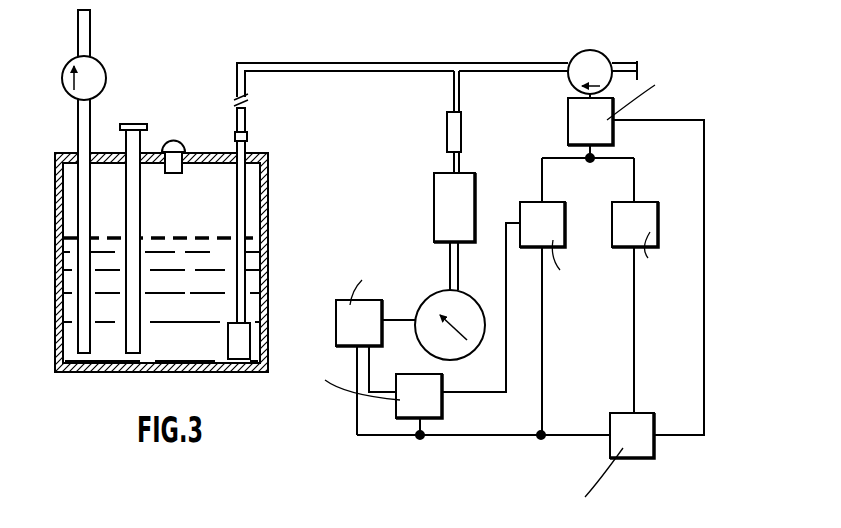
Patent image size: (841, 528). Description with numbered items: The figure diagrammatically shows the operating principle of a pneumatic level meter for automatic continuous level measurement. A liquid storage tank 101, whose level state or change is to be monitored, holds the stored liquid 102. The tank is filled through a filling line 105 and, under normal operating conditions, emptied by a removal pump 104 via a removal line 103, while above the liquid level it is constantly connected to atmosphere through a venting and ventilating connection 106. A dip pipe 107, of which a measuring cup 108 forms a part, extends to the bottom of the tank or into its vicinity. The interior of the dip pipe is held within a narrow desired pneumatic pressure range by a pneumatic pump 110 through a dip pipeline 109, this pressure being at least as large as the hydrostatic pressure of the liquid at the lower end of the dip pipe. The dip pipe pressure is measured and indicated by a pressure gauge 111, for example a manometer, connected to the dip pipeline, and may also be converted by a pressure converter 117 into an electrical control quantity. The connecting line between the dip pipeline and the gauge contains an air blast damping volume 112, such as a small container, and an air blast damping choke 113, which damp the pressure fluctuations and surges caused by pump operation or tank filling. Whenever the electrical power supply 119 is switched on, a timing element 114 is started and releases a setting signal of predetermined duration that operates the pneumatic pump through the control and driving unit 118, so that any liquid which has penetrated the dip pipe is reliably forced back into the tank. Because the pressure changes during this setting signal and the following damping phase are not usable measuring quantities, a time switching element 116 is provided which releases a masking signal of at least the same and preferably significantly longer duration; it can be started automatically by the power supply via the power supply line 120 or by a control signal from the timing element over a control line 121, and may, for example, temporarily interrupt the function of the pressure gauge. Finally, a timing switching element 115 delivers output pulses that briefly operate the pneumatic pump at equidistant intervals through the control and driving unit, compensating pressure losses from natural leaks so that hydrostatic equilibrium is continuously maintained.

The liquid storage tank 101 is at (145, 372).
The liquid 102 is at (188, 343).
The removal line 103 is at (85, 133).
The removal pump 104 is at (98, 71).
The filling line 105 is at (133, 124).
The venting and ventilating connection 106 is at (172, 141).
The dip pipe 107 is at (237, 183).
The measuring cup 108 is at (240, 360).
The dip pipeline 109 is at (250, 66).
The pneumatic pump 110 is at (585, 51).
The pressure gauge 111 is at (455, 352).
The air blast damping volume 112 is at (445, 207).
The air blast damping choke 113 is at (448, 130).
The timing element 114 is at (530, 215).
The timing switching element 115 is at (645, 213).
The time switching element 116 is at (410, 408).
The pressure converter 117 is at (345, 325).
The control and driving unit 118 is at (575, 122).
The electrical power supply 119 is at (633, 440).
The power supply line 120 is at (568, 435).
The control line 121 is at (480, 392).